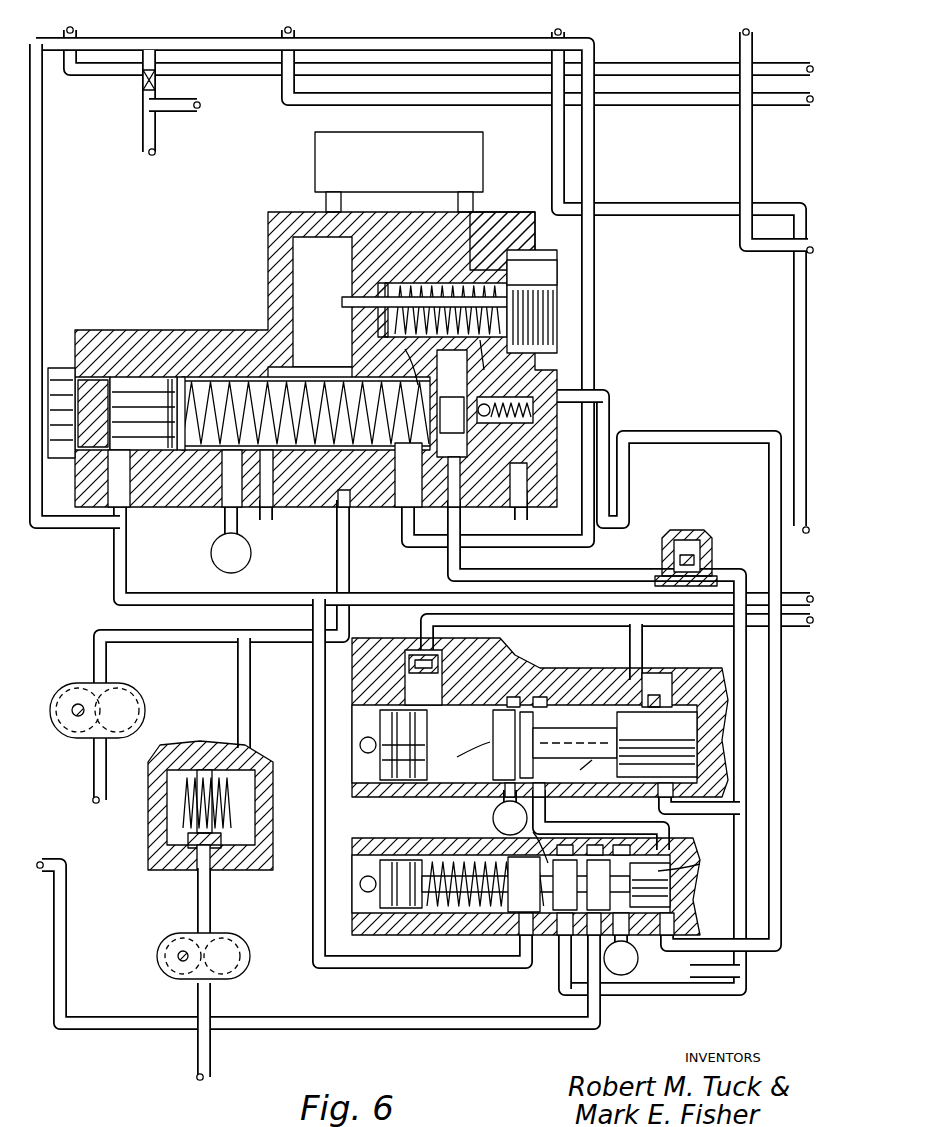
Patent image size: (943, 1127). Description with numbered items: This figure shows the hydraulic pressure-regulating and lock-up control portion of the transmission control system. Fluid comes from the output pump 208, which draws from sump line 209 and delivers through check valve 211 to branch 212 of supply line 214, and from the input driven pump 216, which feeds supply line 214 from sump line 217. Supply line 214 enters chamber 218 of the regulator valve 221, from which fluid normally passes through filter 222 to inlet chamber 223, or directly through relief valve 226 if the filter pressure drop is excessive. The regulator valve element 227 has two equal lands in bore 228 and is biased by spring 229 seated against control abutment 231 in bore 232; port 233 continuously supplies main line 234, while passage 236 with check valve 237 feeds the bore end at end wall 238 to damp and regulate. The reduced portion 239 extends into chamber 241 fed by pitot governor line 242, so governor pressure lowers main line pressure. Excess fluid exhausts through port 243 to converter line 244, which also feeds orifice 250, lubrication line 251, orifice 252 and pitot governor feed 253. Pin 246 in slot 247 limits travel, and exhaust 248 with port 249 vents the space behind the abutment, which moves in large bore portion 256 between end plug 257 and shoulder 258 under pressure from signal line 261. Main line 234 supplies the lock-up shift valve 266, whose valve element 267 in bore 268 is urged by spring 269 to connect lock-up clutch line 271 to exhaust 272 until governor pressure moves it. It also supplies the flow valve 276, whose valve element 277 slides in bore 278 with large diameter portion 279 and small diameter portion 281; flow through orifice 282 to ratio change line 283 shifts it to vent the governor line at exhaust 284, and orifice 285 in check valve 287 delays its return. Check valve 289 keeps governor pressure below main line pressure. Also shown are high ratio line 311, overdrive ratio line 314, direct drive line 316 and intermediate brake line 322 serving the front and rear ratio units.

The output pump 208 is at (226, 946).
The sump line 209 is at (206, 1010).
The check valve 211 is at (182, 865).
The branch of supply line 212 is at (236, 688).
The supply line 214 is at (258, 644).
The input driven pump 216 is at (78, 688).
The sump line 217 is at (93, 787).
The chamber 218 is at (296, 250).
The regulator valve 221 is at (319, 373).
The filter 222 is at (468, 154).
The inlet chamber 223 is at (487, 268).
The relief valve 226 is at (380, 289).
The regulator valve element 227 is at (355, 377).
The bore 228 is at (266, 345).
The spring 229 is at (180, 410).
The control abutment 231 is at (140, 380).
The bore in land a 232 is at (350, 377).
The port 233 is at (450, 365).
The main line 234 is at (618, 574).
The passage 236 is at (460, 420).
The check valve 237 is at (492, 432).
The end wall 238 is at (526, 378).
The reduced portion 239 is at (570, 396).
The chamber 241 is at (527, 480).
The pitot governor line 242 is at (43, 158).
The port 243 is at (400, 512).
The converter line 244 is at (92, 46).
The pin or screw 246 is at (268, 518).
The slot 247 is at (286, 455).
The exhaust 248 is at (210, 557).
The slot or port 249 is at (218, 472).
The orifice 250 is at (146, 82).
The lubrication line 251 is at (149, 155).
The orifice 252 is at (158, 105).
The pitot governor feed 253 is at (200, 107).
The large bore portion 256 is at (185, 385).
The end plug 257 is at (83, 380).
The shoulder 258 is at (200, 383).
The signal line 261 is at (117, 578).
The lock-up shift valve 266 is at (535, 868).
The valve element 267 is at (660, 888).
The bore 268 is at (562, 953).
The spring 269 is at (437, 862).
The lock-up clutch line 271 is at (50, 862).
The exhaust 272 is at (640, 963).
The flow valve 276 is at (596, 668).
The valve element 277 is at (565, 740).
The bore 278 is at (545, 790).
The large diameter portion 279 is at (540, 728).
The small diameter portion 281 is at (665, 806).
The orifice 282 is at (650, 690).
The ratio change line 283 is at (420, 626).
The exhaust 284 is at (493, 822).
The orifice 285 is at (434, 700).
The check valve 287 is at (478, 680).
The check valve 289 is at (703, 535).
The high ratio line 311 is at (563, 33).
The overdrive ratio line 314 is at (286, 32).
The direct drive line 316 is at (74, 74).
The intermediate brake line 322 is at (740, 34).